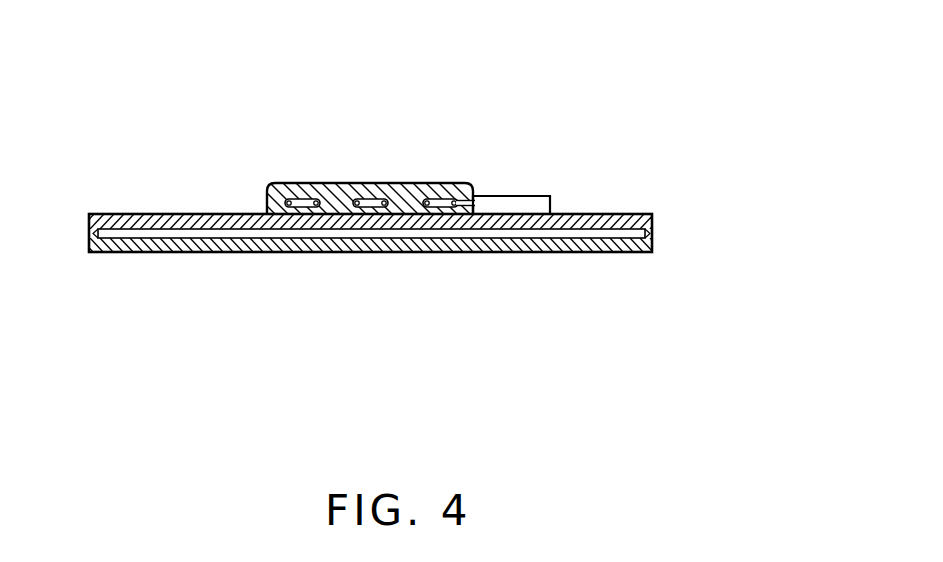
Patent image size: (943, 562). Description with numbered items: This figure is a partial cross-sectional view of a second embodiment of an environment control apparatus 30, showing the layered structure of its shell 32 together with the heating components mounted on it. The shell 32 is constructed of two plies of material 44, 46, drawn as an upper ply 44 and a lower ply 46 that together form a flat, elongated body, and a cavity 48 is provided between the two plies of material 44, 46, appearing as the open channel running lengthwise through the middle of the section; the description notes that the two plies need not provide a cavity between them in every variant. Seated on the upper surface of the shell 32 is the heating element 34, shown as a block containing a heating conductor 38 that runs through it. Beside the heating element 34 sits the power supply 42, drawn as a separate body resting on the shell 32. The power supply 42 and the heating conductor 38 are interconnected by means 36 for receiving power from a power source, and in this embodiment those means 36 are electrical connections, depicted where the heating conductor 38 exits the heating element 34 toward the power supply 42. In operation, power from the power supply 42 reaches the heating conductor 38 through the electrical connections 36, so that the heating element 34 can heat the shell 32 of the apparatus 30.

The sensor assembly 30 is at (673, 158).
The shell 32 is at (422, 215).
The heating element 34 is at (360, 128).
The means for receiving power 36 is at (470, 185).
The heating conductor 38 is at (332, 185).
The power supply 42 is at (500, 196).
The ply of material 44 is at (588, 213).
The ply of material 46 is at (498, 252).
The cavity 48 is at (172, 233).